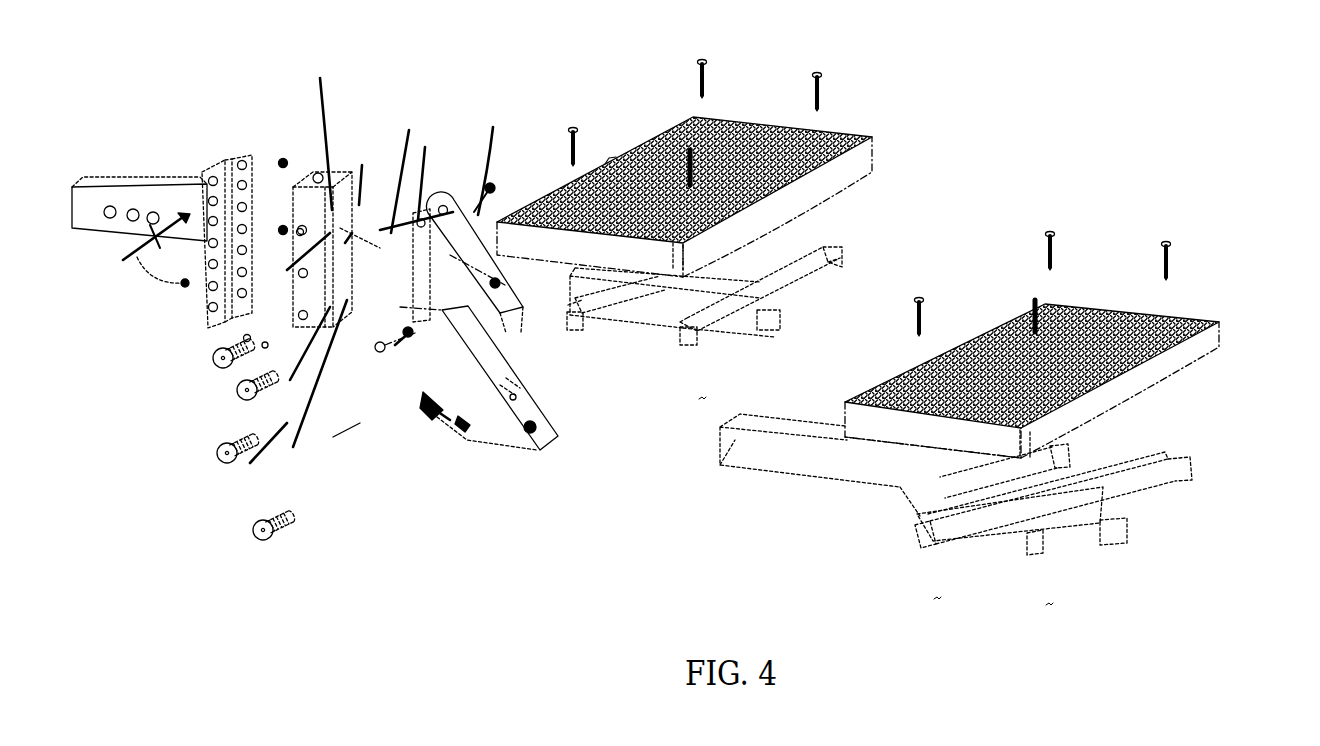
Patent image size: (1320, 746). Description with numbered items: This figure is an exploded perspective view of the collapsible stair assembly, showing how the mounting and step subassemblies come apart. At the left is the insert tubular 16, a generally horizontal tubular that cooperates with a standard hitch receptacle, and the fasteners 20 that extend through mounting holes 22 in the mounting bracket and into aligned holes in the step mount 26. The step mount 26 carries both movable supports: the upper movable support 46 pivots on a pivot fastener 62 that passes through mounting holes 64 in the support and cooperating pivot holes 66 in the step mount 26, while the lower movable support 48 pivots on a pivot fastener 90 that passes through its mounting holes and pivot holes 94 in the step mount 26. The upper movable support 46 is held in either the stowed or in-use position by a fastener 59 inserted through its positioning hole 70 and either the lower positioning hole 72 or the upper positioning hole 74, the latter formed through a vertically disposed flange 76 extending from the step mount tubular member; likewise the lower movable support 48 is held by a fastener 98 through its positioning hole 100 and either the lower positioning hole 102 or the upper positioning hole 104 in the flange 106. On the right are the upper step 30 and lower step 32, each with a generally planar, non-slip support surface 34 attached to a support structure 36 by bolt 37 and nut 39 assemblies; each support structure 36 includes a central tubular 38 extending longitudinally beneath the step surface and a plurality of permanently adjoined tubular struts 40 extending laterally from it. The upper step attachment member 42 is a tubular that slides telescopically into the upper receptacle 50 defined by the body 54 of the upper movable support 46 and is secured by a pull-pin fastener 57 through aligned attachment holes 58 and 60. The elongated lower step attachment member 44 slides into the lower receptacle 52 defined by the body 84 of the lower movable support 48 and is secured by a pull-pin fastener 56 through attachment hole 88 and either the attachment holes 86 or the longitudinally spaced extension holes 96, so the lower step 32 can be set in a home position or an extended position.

The insert tubular 16 is at (98, 172).
The fasteners 20 is at (140, 249).
The mounting holes 22 is at (172, 286).
The step mount 26 is at (333, 167).
The upper step 30 is at (873, 157).
The lower step 32 is at (1229, 339).
The support surface 34 is at (743, 127).
The support structures 36 is at (872, 261).
The bolt 37 is at (823, 87).
The central tubular 38 is at (1005, 535).
The nut 39 is at (829, 324).
The tubular struts 40 is at (1146, 447).
The upper step attachment member 42 is at (588, 412).
The lower step attachment member 44 is at (778, 504).
The upper movable support 46 is at (495, 148).
The lower movable support 48 is at (433, 420).
The upper receptacle 50 is at (485, 280).
The lower receptacle 52 is at (548, 448).
The body 54 is at (493, 185).
The fastener 56 is at (290, 527).
The fastener 57 is at (237, 403).
The attachment hole 58 is at (580, 299).
The fastener 59 is at (213, 358).
The attachment hole 60 is at (447, 287).
The pivot fastener 62 is at (414, 159).
The mounting holes 64 is at (438, 162).
The pivot holes 66 is at (321, 130).
The positioning hole 70 is at (430, 247).
The lower positioning hole 72 is at (294, 267).
The upper positioning hole 74 is at (376, 170).
The flange 76 is at (352, 233).
The body 84 is at (425, 388).
The attachment holes 86 is at (833, 457).
The attachment hole 88 is at (463, 422).
The pivot fastener 90 is at (395, 345).
The pivot holes 94 is at (302, 361).
The extension holes 96 is at (751, 453).
The fastener 98 is at (217, 460).
The positioning hole 100 is at (330, 447).
The lower positioning hole 102 is at (252, 464).
The upper positioning hole 104 is at (293, 447).
The flange 106 is at (339, 276).